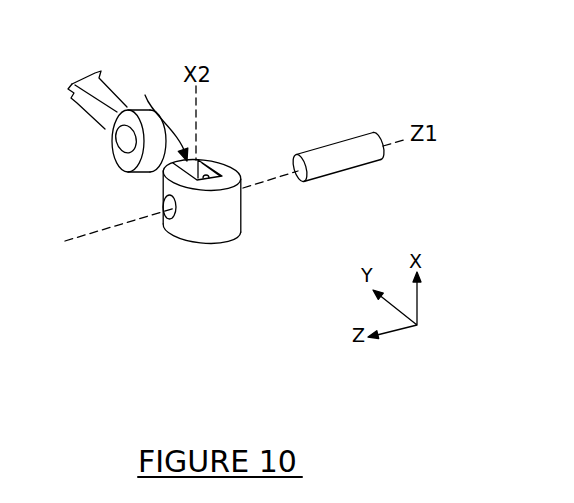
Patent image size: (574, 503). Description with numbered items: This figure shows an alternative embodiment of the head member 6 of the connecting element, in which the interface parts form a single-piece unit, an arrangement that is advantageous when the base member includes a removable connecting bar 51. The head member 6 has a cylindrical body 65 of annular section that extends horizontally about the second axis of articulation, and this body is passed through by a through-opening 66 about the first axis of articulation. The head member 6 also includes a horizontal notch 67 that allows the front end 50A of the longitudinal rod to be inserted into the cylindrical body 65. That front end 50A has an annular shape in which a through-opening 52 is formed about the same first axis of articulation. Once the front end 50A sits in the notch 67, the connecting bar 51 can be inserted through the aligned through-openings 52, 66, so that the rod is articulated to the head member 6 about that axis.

The front portion of the longitudinal rod 50A is at (107, 95).
The through-opening 52 is at (125, 138).
The horizontal notch 67 is at (162, 116).
The head member 6 is at (207, 220).
The cylindrical body 65 is at (197, 234).
The through-opening 66 is at (172, 214).
The connecting bar 51 is at (345, 163).